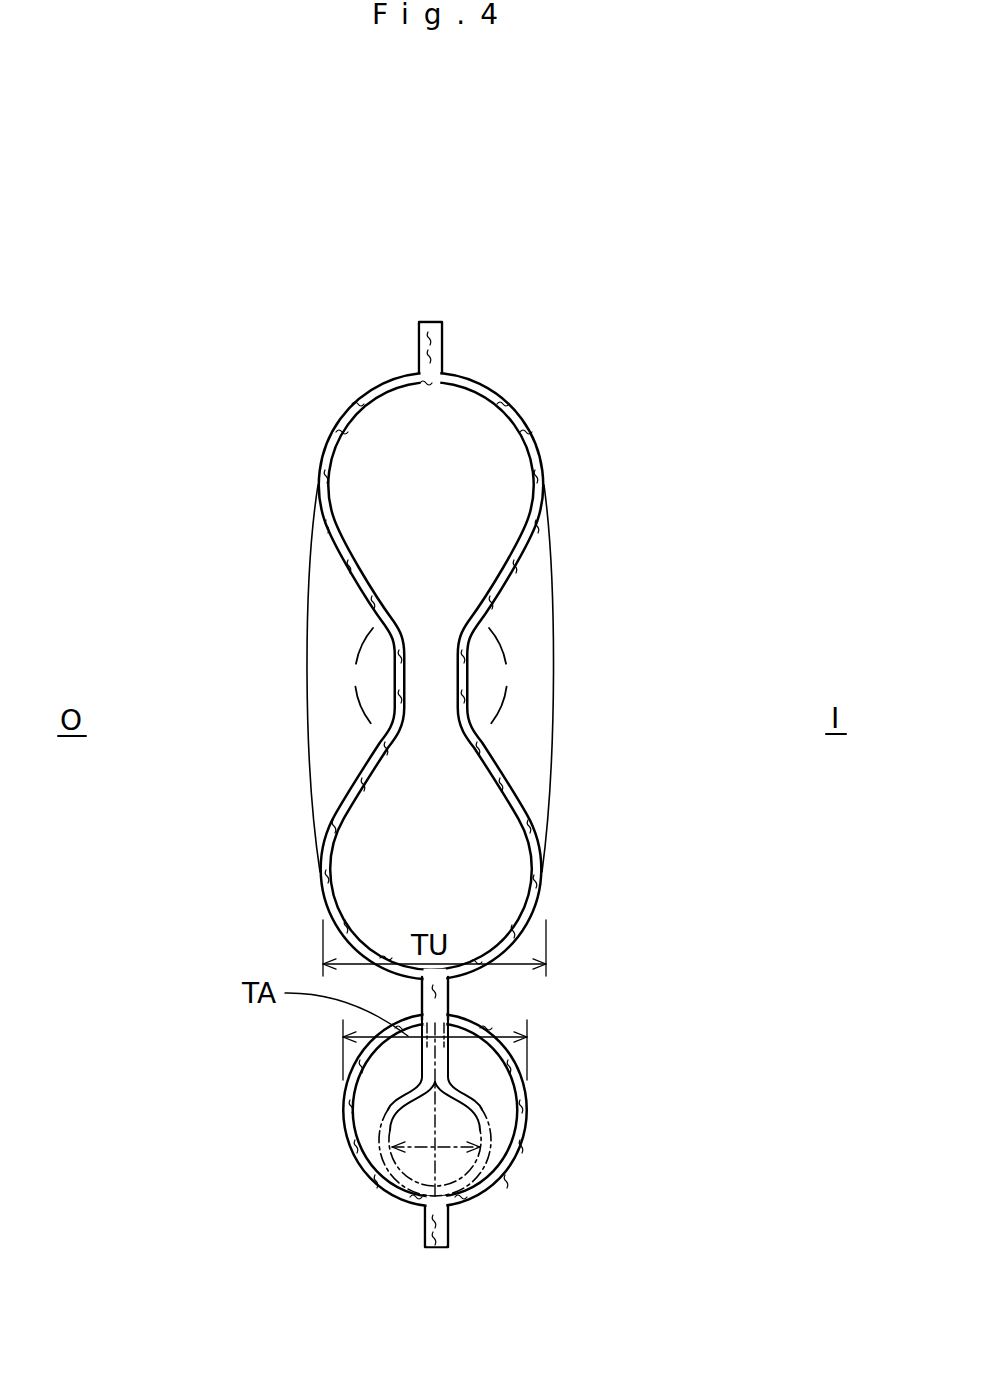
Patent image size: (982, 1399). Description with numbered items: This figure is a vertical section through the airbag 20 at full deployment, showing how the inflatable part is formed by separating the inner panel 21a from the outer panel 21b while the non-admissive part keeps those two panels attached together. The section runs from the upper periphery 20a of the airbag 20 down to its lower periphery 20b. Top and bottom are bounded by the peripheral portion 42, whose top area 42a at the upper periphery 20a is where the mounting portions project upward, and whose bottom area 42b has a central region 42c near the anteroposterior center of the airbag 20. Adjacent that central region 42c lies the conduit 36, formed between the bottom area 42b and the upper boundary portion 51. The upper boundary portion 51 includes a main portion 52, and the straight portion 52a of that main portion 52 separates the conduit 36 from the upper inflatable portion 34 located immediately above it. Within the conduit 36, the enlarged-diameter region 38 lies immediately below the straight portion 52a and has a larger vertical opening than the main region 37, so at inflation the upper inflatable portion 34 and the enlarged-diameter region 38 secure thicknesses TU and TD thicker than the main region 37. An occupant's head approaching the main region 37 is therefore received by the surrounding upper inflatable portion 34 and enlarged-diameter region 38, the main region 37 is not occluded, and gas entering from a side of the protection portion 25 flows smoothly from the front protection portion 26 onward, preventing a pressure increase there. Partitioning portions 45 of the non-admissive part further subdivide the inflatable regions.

The airbag 20 is at (423, 585).
The upper periphery 20a is at (442, 288).
The lower periphery 20b is at (458, 1275).
The inner panel 21a is at (543, 648).
The outer panel 21b is at (494, 648).
The protection portion 25 is at (543, 648).
The front protection portion 26 is at (543, 648).
The upper inflatable portion 34 is at (480, 815).
The conduit 36 is at (517, 1108).
The main region 37 is at (410, 1168).
The enlarged-diameter region 38 is at (517, 1108).
The peripheral portion 42 is at (442, 288).
The top area 42a is at (442, 288).
The bottom area 42b is at (458, 1275).
The central region 42c is at (410, 1230).
The partitioning portions 45 is at (448, 994).
The upper boundary portion 51 is at (614, 1001).
The main portion 52 is at (614, 1001).
The straight portion 52a is at (614, 1001).